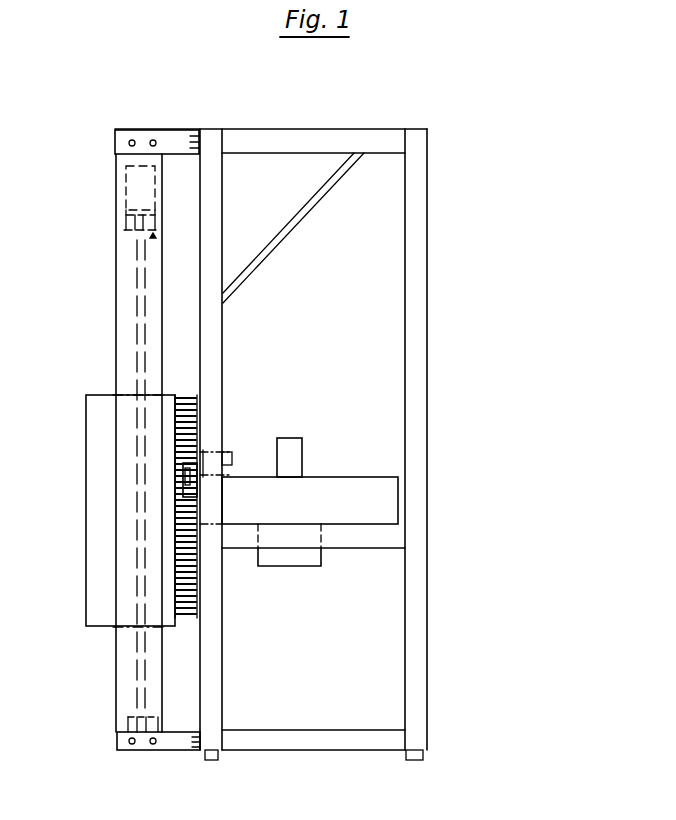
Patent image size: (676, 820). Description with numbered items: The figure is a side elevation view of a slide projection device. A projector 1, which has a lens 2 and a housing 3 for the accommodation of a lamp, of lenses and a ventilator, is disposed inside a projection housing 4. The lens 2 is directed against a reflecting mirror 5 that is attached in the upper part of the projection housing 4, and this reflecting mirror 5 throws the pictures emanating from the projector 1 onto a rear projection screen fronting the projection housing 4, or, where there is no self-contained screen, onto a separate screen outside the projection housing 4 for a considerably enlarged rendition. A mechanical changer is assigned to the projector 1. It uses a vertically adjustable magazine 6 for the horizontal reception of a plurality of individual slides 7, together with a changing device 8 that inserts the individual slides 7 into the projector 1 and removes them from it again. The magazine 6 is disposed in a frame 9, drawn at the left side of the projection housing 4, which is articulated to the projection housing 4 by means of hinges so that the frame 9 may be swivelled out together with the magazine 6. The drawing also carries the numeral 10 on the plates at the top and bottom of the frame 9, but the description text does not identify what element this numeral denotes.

The projector 1 is at (390, 499).
The lens 2 is at (298, 452).
The housing 3 is at (303, 562).
The projection housing 4 is at (413, 268).
The reflecting mirror 5 is at (330, 190).
The magazine 6 is at (98, 556).
The individual slides 7 is at (188, 397).
The changing device 8 is at (183, 487).
The frame 9 is at (127, 292).
The mounting plate 10 is at (139, 130).